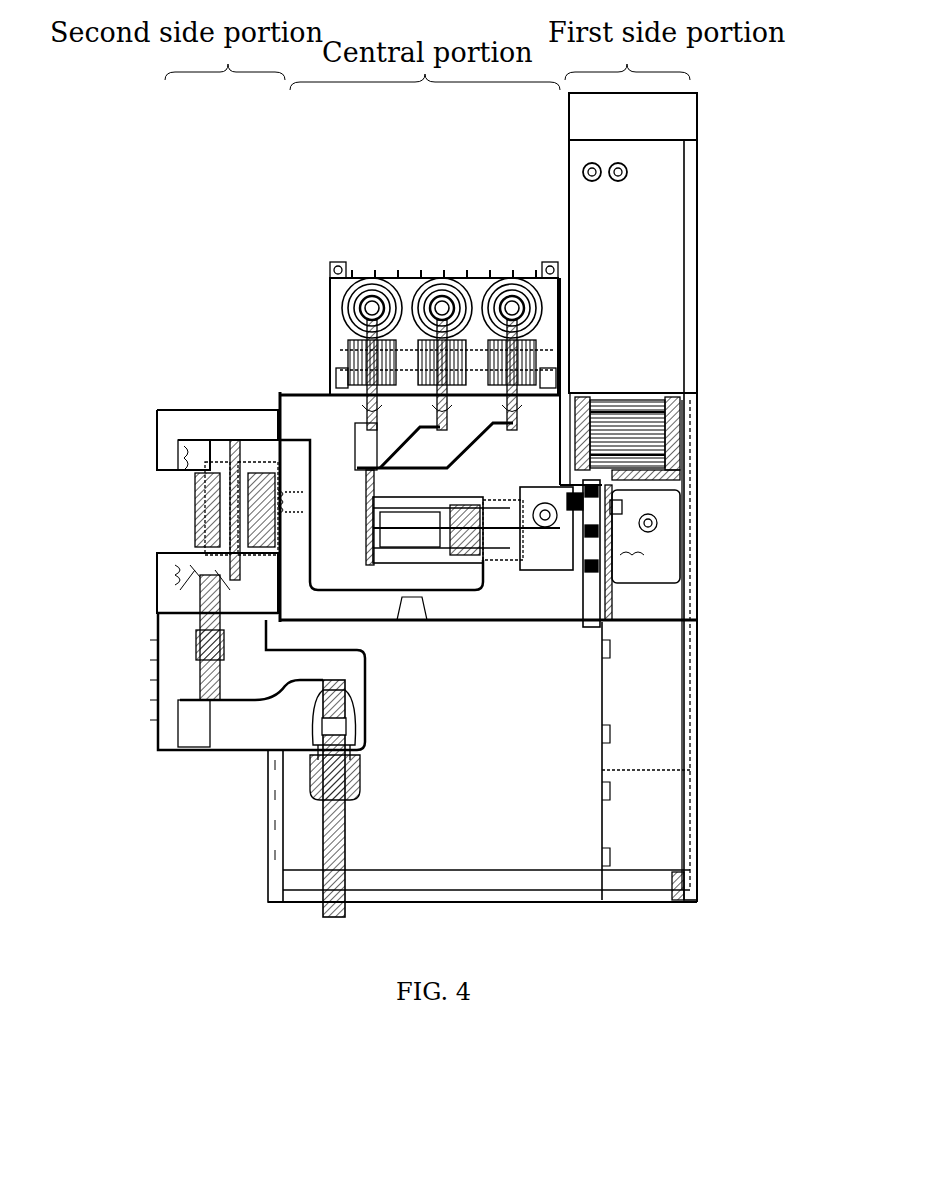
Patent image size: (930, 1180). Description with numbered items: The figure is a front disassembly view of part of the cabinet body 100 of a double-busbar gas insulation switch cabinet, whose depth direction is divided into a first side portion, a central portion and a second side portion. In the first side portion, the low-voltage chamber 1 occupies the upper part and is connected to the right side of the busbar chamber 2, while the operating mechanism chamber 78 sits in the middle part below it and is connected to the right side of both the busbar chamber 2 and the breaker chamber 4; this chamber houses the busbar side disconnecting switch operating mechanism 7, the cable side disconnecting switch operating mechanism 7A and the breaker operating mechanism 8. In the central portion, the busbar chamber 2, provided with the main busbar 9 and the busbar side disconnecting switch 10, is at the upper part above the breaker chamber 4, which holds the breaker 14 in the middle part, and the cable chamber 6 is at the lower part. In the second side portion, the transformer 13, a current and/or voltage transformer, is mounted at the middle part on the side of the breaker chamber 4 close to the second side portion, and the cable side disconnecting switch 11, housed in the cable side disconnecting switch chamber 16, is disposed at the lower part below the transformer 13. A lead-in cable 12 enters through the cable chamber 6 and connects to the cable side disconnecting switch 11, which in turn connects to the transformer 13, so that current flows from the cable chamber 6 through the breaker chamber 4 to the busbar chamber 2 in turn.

The cabinet body 100 is at (150, 190).
The low-voltage chamber 1 is at (637, 277).
The busbar chamber 2 is at (470, 290).
The main busbar 9 is at (420, 295).
The busbar side disconnecting switch 10 is at (397, 340).
The transformer 13 is at (190, 518).
The cable side disconnecting switch 11 is at (200, 650).
The cable side disconnecting switch chamber 16 is at (183, 683).
The cable chamber 6 is at (420, 770).
The lead-in cable 12 is at (352, 807).
The breaker 14 is at (480, 553).
The breaker chamber 4 is at (615, 428).
The busbar side disconnecting switch operating mechanism 7 is at (510, 473).
The cable side disconnecting switch operating mechanism 7A is at (625, 474).
The breaker operating mechanism 8 is at (645, 523).
The operating mechanism chamber 78 is at (645, 592).